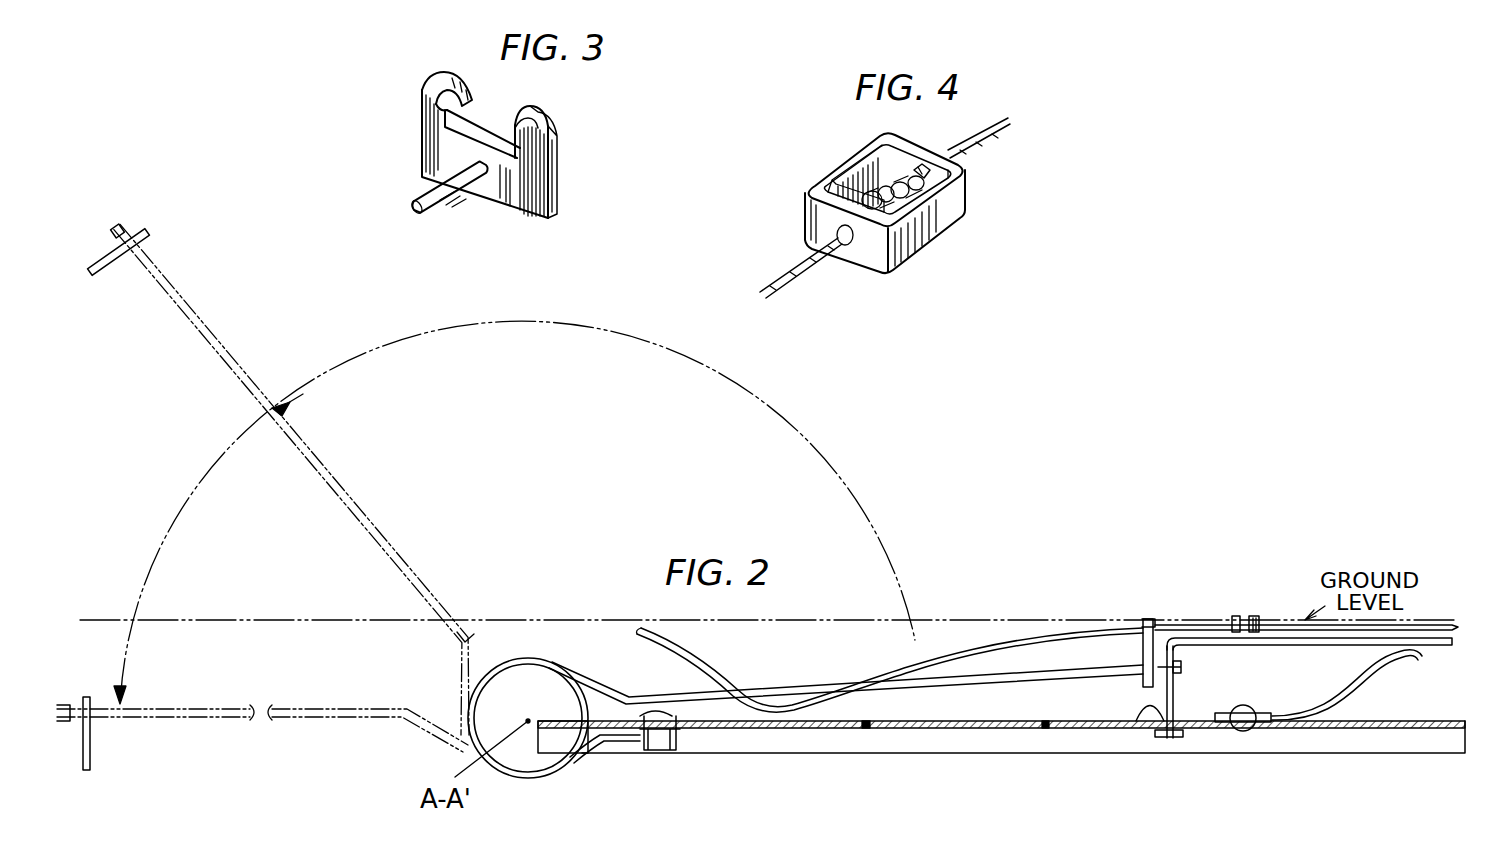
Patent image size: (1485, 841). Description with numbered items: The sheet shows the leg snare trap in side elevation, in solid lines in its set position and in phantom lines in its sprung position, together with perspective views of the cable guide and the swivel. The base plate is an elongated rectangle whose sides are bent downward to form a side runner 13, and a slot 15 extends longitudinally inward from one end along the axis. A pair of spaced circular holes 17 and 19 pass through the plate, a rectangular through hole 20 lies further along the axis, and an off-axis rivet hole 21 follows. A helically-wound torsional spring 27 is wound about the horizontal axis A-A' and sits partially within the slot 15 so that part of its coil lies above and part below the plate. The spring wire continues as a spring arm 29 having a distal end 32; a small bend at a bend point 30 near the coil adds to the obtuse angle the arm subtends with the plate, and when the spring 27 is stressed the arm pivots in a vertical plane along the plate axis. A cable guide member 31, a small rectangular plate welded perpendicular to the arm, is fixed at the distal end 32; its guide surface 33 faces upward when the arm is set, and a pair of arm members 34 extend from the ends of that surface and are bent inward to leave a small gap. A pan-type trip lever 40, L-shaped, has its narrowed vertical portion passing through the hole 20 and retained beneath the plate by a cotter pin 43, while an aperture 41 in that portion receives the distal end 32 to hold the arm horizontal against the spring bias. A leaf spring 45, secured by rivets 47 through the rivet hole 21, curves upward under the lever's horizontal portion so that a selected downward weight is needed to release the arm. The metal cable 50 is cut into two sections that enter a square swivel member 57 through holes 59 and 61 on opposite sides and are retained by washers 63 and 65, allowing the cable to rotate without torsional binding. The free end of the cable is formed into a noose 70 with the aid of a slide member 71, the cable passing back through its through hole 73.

In FIG. 2, the side runner 13 is at (952, 742).
In FIG. 2, the slot 15 is at (556, 721).
In FIG. 2, the circular hole 17 is at (866, 732).
In FIG. 2, the circular hole 19 is at (1048, 732).
In FIG. 2, the rectangular through hole 20 is at (1140, 722).
In FIG. 2, the rivet hole 21 is at (1252, 722).
In FIG. 2, the helically-wound torsional spring 27 is at (528, 779).
In FIG. 3, the spring arm 29 is at (456, 200).
In FIG. 2, the spring arm 29 is at (218, 334).
In FIG. 2, the bend point 30 is at (474, 636).
In FIG. 3, the cable guide member 31 is at (526, 216).
In FIG. 2, the cable guide member 31 is at (147, 232).
In FIG. 2, the distal end 32 is at (114, 225).
In FIG. 3, the guide surface 33 is at (484, 138).
In FIG. 3, the arm members 34 is at (452, 78).
In FIG. 2, the arm members 34 is at (1151, 620).
In FIG. 2, the pan-type trip lever 40 is at (1305, 645).
In FIG. 2, the aperture 41 is at (1175, 672).
In FIG. 2, the cotter pin 43 is at (1180, 735).
In FIG. 2, the leaf spring 45 is at (1365, 684).
In FIG. 2, the rivets 47 is at (1246, 706).
In FIG. 2, the metal cable 50 is at (1018, 642).
In FIG. 4, the swivel member 57 is at (936, 224).
In FIG. 4, the through hole 59 is at (852, 242).
In FIG. 4, the through hole 61 is at (928, 166).
In FIG. 4, the washer 63 is at (872, 194).
In FIG. 4, the washer 65 is at (900, 182).
In FIG. 2, the noose 70 is at (1440, 626).
In FIG. 2, the slide member 71 is at (1254, 615).
In FIG. 2, the through hole 73 is at (1238, 615).